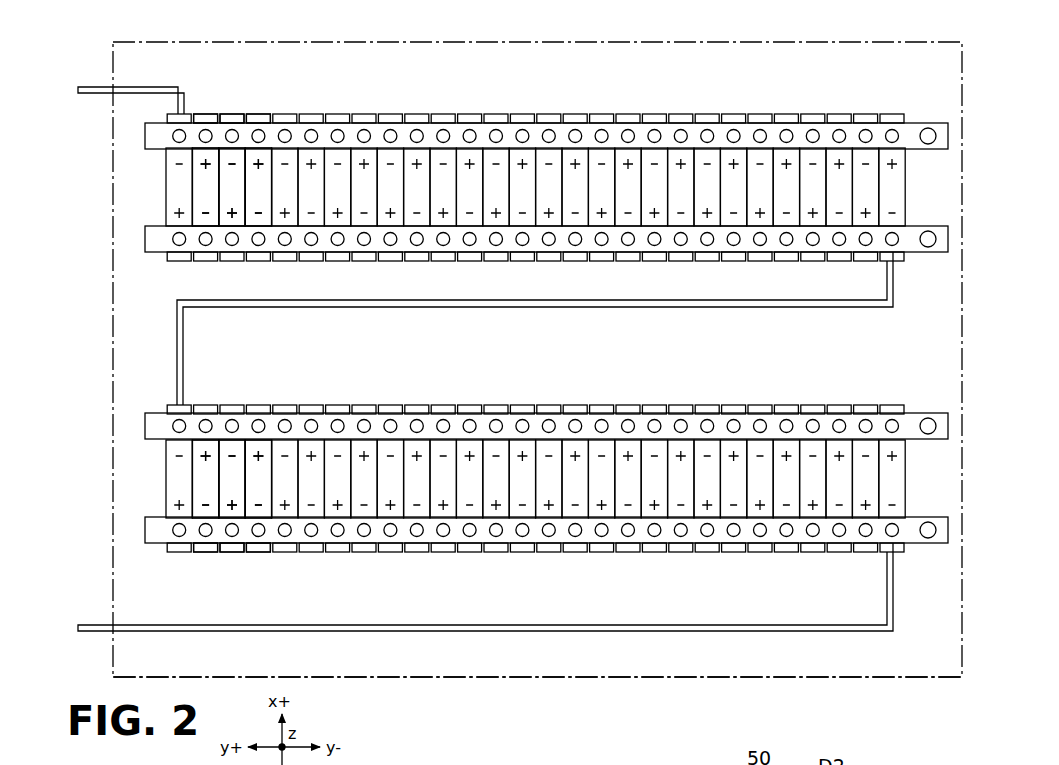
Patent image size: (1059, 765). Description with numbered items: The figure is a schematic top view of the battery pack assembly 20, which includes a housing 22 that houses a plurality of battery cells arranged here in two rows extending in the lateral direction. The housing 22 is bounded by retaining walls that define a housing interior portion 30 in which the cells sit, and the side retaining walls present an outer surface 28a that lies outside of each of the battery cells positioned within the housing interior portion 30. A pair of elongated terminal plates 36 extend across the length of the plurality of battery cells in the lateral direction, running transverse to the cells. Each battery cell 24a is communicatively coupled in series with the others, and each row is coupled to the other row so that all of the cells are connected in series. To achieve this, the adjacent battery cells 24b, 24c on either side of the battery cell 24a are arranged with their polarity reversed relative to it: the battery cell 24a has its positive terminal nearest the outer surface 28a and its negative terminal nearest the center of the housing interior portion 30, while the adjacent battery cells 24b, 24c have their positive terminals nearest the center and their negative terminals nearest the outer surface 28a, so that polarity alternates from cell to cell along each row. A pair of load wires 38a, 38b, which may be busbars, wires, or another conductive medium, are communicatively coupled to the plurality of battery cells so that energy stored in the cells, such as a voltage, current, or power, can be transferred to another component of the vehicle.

The battery pack assembly 20 is at (320, 25).
The housing 22 is at (582, 40).
The battery cell 24a is at (228, 114).
The adjacent battery cell 24b is at (207, 114).
The adjacent battery cell 24c is at (258, 114).
The outer surface 28a is at (455, 677).
The housing interior portion 30 is at (145, 343).
The elongated terminal plate 36 is at (938, 121).
The load wire 38a is at (100, 87).
The load wire 38b is at (100, 625).